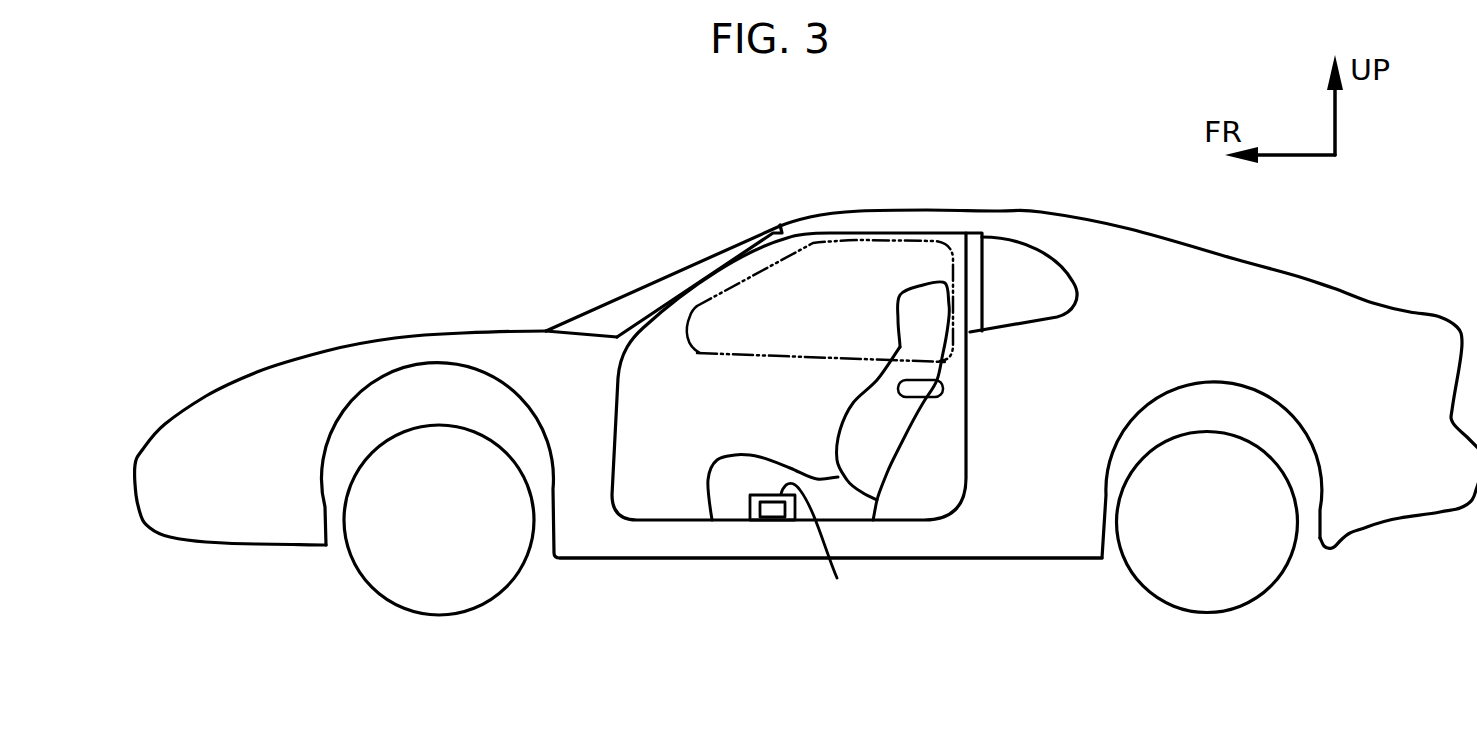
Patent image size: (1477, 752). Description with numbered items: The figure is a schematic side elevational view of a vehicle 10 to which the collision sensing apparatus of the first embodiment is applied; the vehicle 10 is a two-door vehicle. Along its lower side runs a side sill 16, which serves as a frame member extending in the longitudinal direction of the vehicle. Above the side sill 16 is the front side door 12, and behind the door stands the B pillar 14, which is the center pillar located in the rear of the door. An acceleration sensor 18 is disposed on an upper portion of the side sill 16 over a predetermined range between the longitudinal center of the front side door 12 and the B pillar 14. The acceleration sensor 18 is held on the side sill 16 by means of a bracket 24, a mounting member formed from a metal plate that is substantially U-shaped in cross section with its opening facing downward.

The vehicle 10 is at (1041, 204).
The front side door 12 is at (690, 365).
The B pillar 14 is at (977, 250).
The side sill 16 is at (808, 547).
The acceleration sensor 18 is at (768, 514).
The bracket 24 is at (819, 547).